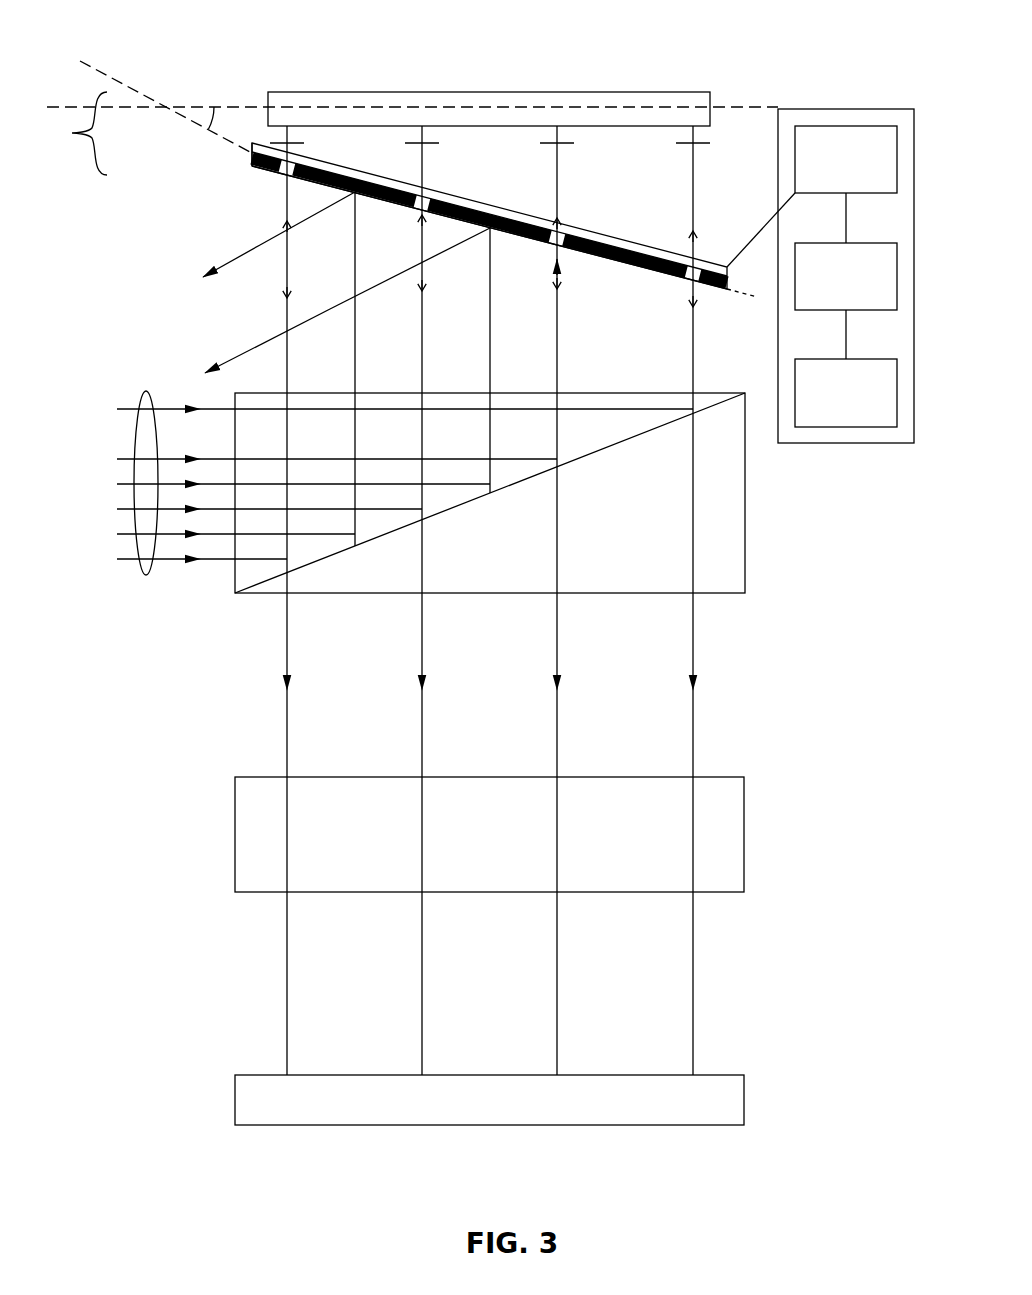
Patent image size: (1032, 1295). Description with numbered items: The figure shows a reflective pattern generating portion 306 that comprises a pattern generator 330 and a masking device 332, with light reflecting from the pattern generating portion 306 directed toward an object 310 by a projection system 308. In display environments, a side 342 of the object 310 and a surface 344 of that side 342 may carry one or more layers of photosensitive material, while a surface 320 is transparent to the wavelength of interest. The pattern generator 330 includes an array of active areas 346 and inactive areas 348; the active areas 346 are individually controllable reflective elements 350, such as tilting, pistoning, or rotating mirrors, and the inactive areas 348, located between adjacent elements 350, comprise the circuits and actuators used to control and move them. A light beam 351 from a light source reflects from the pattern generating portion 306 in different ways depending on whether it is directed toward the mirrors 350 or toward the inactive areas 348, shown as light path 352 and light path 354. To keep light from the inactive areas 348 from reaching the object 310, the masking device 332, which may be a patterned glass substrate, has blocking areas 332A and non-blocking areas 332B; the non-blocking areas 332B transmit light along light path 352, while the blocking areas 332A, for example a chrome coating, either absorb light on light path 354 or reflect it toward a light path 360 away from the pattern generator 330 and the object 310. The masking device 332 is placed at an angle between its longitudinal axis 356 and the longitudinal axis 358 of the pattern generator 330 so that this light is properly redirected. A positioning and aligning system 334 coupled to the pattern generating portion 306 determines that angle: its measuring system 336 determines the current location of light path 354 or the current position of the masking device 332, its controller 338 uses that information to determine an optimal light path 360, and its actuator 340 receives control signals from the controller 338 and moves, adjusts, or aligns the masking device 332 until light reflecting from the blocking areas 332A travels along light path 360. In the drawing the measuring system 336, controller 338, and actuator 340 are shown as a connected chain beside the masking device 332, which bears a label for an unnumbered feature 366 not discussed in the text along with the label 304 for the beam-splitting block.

The beam splitter 304 is at (745, 504).
The reflective pattern generating portion 306 is at (68, 133).
The projection system 308 is at (745, 820).
The object 310 is at (745, 1099).
The surface 320 is at (735, 1073).
The pattern generator 330 is at (516, 91).
The masking device 332 is at (716, 260).
The blocking areas 332A is at (248, 168).
The non-blocking areas 332B is at (280, 177).
The positioning and aligning system 334 is at (816, 108).
The measuring system 336 is at (880, 358).
The controller 338 is at (884, 241).
The actuator 340 is at (879, 124).
The side 342 is at (731, 1128).
The surface 344 is at (649, 1123).
The active areas 346 is at (686, 156).
The inactive areas 348 is at (644, 135).
The individually controllable reflective elements 350 is at (710, 143).
The light beam 351 is at (146, 392).
The light path 352 is at (286, 381).
The light path 354 is at (355, 247).
The longitudinal axis 356 is at (106, 78).
The longitudinal axis 358 is at (186, 106).
The light path 360 is at (234, 259).
The back surface of reflective element 366 is at (707, 288).